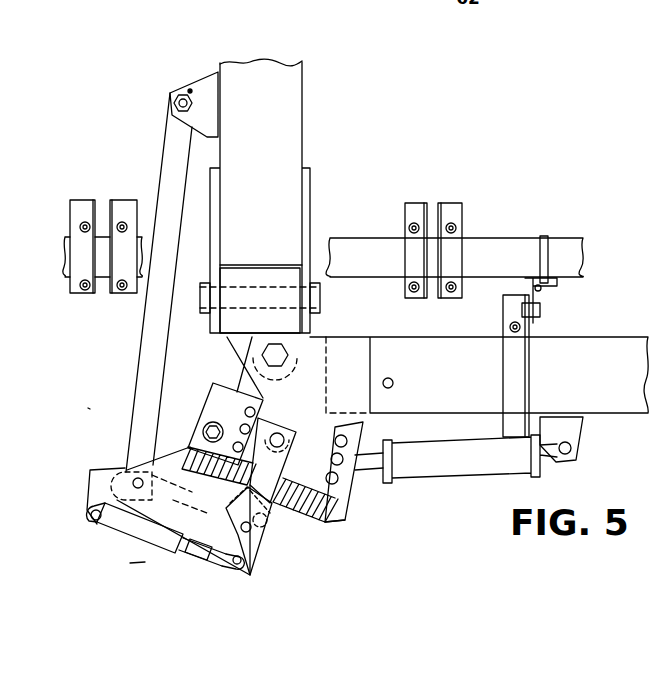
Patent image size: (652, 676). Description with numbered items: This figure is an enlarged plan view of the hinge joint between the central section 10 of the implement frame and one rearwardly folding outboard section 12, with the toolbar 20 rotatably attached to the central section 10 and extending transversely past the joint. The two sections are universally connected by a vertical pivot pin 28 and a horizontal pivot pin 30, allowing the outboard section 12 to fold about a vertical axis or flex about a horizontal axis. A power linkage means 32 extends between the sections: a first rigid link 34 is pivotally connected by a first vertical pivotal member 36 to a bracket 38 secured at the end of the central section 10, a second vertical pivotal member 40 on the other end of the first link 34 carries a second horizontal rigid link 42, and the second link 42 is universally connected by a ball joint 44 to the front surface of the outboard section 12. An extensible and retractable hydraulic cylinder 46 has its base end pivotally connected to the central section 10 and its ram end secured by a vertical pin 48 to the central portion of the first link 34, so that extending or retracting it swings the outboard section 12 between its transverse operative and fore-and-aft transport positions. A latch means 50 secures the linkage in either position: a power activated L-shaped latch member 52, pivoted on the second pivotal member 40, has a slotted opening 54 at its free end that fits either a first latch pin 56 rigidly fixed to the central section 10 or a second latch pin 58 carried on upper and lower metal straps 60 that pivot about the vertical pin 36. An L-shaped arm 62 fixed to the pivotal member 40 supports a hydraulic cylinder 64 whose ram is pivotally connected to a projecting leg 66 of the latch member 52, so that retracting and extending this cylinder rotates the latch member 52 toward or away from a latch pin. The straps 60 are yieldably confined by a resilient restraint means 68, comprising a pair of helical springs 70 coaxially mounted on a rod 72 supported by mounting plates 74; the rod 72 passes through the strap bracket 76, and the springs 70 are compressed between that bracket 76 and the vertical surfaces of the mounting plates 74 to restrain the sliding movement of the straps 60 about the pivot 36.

The central section 10 is at (447, 340).
The outboard section 12 is at (298, 81).
The toolbar 20 is at (491, 241).
The vertical pivot pin 28 is at (288, 355).
The horizontal pivot pin 30 is at (320, 298).
The power linkage means 32 is at (90, 409).
The first rigid link 34 is at (141, 466).
The first vertical pivotal member 36 is at (285, 439).
The bracket 38 is at (348, 338).
The second vertical pivotal member 40 is at (126, 471).
The second horizontal rigid link 42 is at (167, 150).
The ball joint 44 is at (182, 92).
The hydraulic cylinder 46 is at (443, 474).
The vertical pin 48 is at (188, 447).
The latch means 50 is at (148, 562).
The L-shaped latch member 52 is at (179, 520).
The slotted opening 54 is at (262, 518).
The first latch pin 56 is at (392, 381).
The second latch pin 58 is at (259, 535).
The metal straps 60 is at (268, 423).
The L-shaped arm 62 is at (85, 489).
The hydraulic cylinder 64 is at (130, 541).
The projecting leg 66 is at (254, 552).
The resilient restraint means 68 is at (352, 491).
The helical springs 70 is at (318, 514).
The rod 72 is at (343, 518).
The mounting plates 74 is at (231, 386).
The strap bracket 76 is at (273, 489).